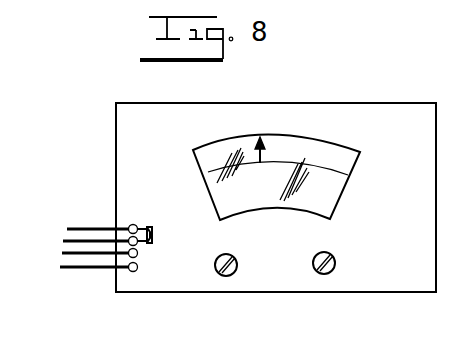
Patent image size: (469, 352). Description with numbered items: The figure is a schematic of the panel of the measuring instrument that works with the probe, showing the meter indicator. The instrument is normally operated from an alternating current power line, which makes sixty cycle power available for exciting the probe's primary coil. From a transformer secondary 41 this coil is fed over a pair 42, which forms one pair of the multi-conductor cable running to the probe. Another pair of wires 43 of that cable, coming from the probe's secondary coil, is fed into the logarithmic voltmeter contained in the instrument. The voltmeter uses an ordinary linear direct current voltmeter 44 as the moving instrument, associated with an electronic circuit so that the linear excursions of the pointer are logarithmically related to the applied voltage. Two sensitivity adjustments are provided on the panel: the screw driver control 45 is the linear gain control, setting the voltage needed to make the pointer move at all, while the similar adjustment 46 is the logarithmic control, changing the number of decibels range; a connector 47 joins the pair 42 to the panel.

The transformer secondary 41 is at (392, 103).
The pair 42 is at (58, 222).
The pair of wires 43 is at (58, 250).
The linear direct current voltmeter 44 is at (298, 137).
The screw driver control 45 is at (233, 276).
The adjustment 46 is at (327, 275).
The connector plug 47 is at (147, 227).